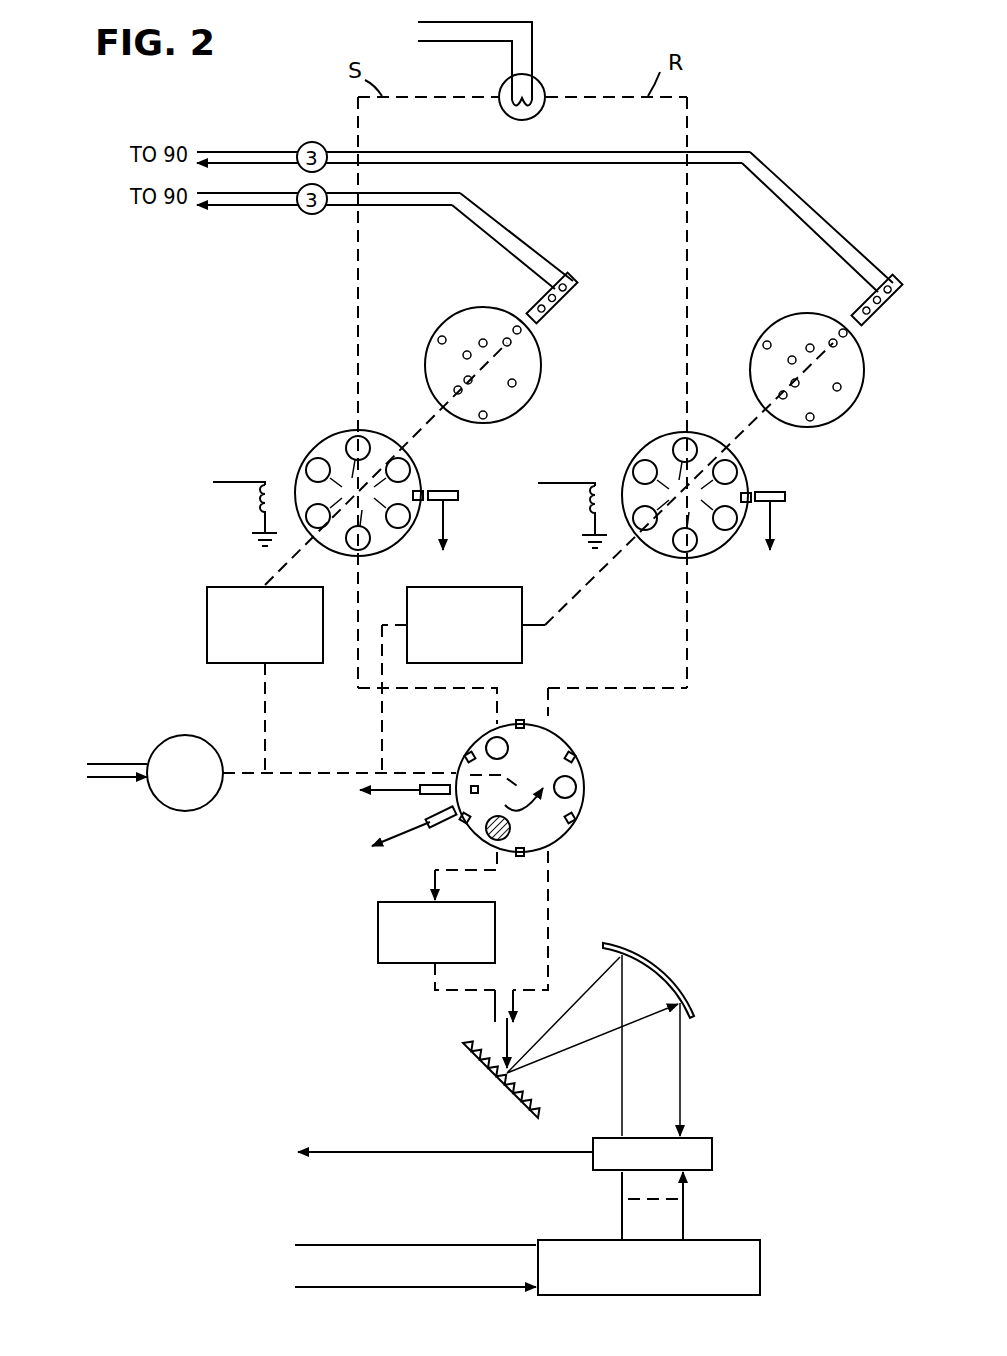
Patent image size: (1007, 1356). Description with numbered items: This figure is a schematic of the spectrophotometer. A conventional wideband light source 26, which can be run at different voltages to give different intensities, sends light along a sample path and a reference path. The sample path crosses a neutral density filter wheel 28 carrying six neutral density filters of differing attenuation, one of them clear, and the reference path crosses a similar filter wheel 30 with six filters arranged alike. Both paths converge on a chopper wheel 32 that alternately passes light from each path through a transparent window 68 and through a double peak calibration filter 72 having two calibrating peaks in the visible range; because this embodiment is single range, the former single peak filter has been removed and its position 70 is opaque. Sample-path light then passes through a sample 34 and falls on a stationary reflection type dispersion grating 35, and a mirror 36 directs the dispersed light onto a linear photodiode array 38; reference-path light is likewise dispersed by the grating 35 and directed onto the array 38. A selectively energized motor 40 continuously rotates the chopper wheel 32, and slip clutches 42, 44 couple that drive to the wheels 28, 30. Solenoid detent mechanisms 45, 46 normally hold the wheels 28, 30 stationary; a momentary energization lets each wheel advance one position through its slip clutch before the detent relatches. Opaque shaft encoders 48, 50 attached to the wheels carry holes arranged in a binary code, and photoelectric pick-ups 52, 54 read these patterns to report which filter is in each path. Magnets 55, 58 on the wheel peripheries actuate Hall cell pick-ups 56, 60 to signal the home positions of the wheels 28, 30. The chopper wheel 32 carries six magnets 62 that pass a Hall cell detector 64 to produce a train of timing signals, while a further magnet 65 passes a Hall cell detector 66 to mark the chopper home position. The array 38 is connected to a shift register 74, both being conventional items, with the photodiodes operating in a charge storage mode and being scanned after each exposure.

The wideband light source 26 is at (540, 86).
The neutral density filter wheel 28 is at (338, 432).
The filter wheel 30 is at (666, 433).
The chopper wheel 32 is at (562, 738).
The sample 34 is at (378, 928).
The reflection type dispersion grating 35 is at (487, 1069).
The mirror 36 is at (676, 986).
The linear photodiode array 38 is at (712, 1149).
The motor 40 is at (205, 806).
The slip clutch 42 is at (207, 619).
The slip clutch 44 is at (522, 587).
The solenoid detent mechanism 45 is at (265, 480).
The solenoid detent mechanism 46 is at (596, 481).
The shaft encoder 48 is at (452, 314).
The shaft encoder 50 is at (794, 313).
The photoelectric pick-up 52 is at (576, 290).
The photoelectric pick-up 54 is at (893, 290).
The magnet 55 is at (425, 486).
The Hall cell pick-up 56 is at (460, 494).
The magnet 58 is at (746, 490).
The Hall cell pick-up 60 is at (787, 496).
The magnets 62 is at (466, 752).
The Hall cell pick-up 64 is at (427, 812).
The magnet 65 is at (472, 784).
The Hall cell detector 66 is at (430, 783).
The transparent window 68 is at (494, 736).
The single peak filter position 70 is at (489, 836).
The double peak calibration filter 72 is at (578, 787).
The shift register 74 is at (761, 1283).